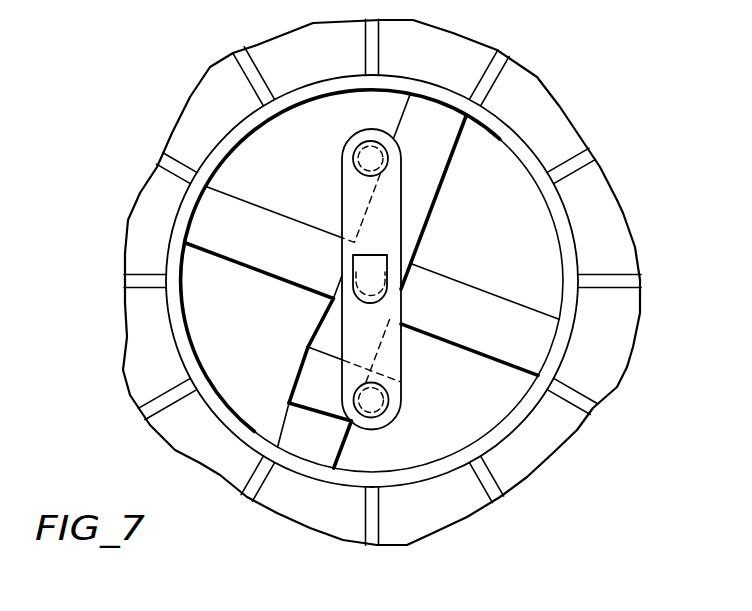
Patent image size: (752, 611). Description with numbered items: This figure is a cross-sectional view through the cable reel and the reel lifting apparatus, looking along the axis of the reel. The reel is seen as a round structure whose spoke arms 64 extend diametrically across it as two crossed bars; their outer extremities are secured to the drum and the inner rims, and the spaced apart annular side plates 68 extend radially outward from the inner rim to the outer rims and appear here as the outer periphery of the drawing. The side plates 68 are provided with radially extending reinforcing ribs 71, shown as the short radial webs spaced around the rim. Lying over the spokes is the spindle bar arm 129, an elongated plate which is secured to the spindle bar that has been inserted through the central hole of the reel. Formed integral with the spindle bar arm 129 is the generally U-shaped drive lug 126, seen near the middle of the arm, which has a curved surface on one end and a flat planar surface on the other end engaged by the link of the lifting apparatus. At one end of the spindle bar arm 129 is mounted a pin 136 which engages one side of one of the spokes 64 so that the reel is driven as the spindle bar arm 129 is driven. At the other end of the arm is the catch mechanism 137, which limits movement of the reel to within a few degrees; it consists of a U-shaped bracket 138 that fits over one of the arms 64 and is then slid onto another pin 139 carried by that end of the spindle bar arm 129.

The spoke arm 64 is at (430, 118).
The side plate 68 is at (617, 262).
The reinforcing rib 71 is at (622, 285).
The drive lug 126 is at (367, 273).
The spindle bar arm 129 is at (383, 214).
The pin 136 is at (352, 166).
The catch mechanism 137 is at (292, 361).
The U-shaped bracket 138 is at (304, 392).
The pin 139 is at (388, 407).